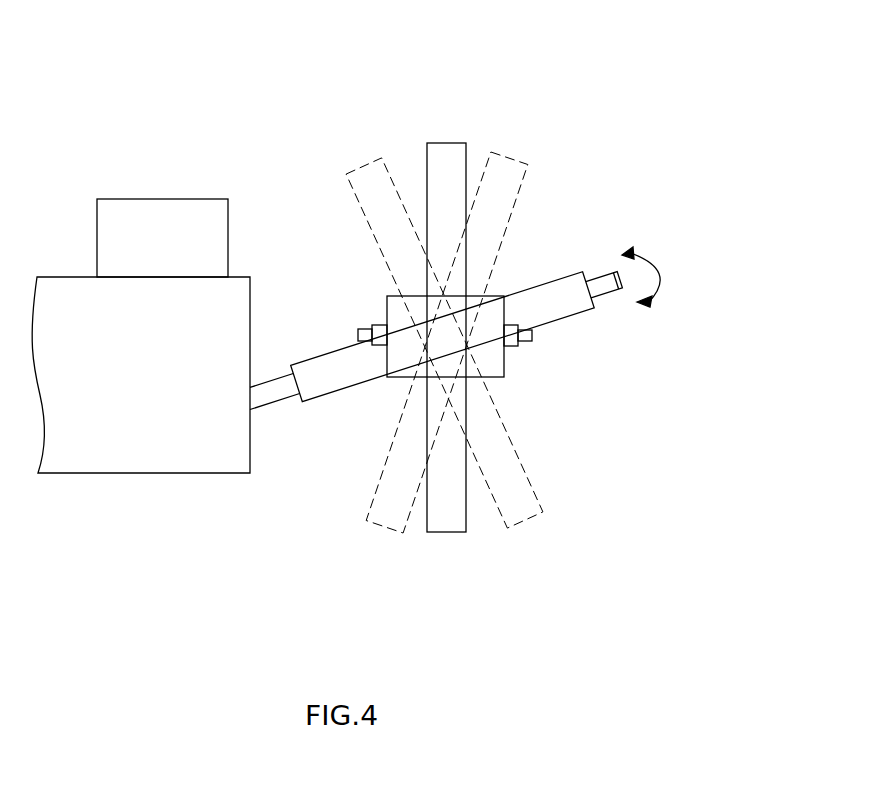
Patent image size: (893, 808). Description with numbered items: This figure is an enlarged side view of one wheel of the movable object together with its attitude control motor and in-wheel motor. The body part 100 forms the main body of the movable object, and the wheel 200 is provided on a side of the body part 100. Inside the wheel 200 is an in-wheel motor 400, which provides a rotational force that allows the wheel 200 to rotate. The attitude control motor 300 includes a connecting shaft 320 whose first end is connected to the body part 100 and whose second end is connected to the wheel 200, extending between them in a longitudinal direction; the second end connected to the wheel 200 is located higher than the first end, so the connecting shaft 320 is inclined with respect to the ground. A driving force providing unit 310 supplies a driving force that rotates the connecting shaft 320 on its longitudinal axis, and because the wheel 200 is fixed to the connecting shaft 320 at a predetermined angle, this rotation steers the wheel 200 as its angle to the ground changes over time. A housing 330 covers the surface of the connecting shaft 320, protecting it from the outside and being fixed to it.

The main body 100 is at (70, 292).
The rotating plate 200 is at (495, 155).
The driving unit 300 is at (378, 212).
The motor 310 is at (160, 197).
The rotating shaft 320 is at (604, 273).
The coupling cylinder 330 is at (540, 295).
The bearing block 400 is at (378, 325).